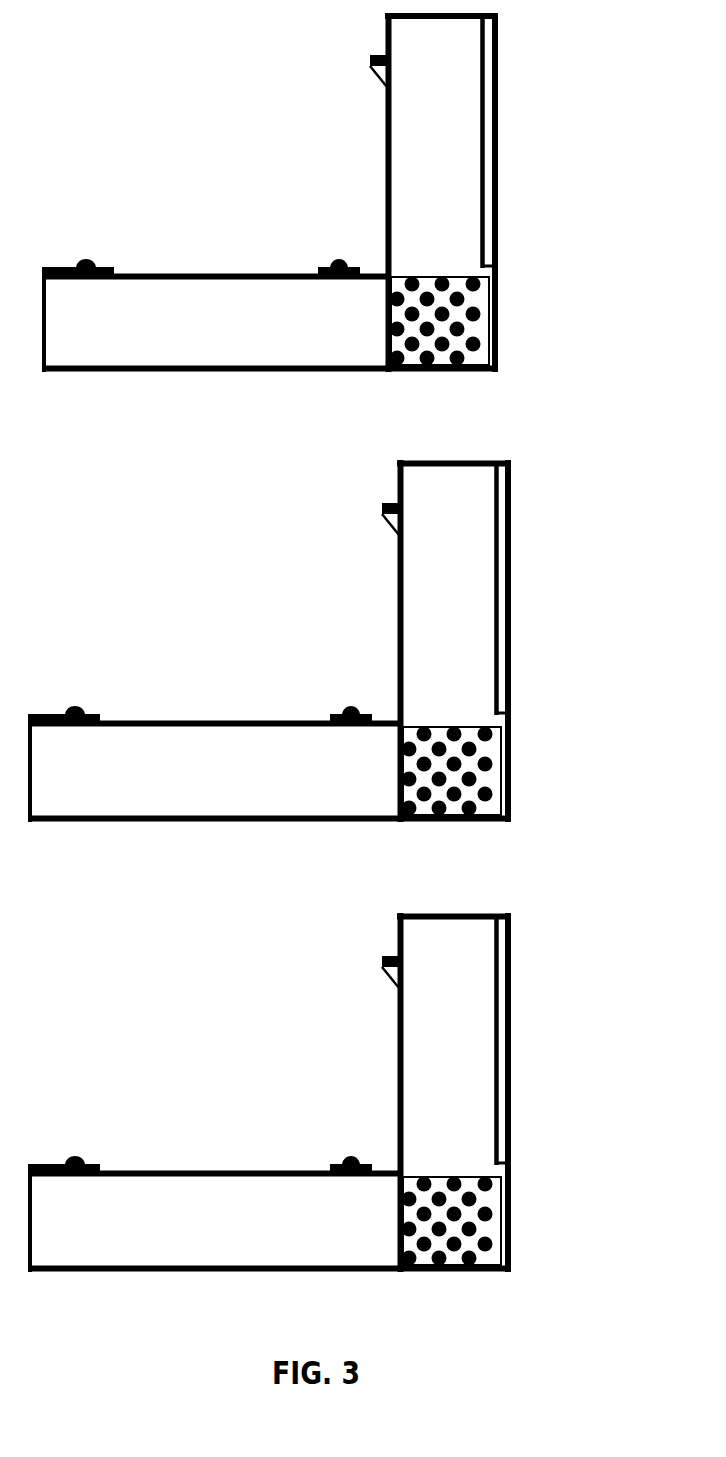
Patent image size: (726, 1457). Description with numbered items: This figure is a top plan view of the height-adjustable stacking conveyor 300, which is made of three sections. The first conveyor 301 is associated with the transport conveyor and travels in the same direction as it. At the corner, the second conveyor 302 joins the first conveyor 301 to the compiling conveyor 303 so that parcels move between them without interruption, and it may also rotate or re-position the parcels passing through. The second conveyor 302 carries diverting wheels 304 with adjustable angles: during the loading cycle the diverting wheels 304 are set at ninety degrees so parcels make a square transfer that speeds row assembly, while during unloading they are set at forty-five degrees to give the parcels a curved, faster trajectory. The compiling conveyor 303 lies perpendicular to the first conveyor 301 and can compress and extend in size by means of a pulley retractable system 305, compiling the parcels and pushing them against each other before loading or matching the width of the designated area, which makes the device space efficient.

The stacking conveyor 300 is at (203, 395).
The first conveyor 301 is at (385, 148).
The second conveyor 302 is at (492, 318).
The compiling conveyor 303 is at (262, 275).
The diverting wheels 304 is at (495, 358).
The pulley retractable system 305 is at (56, 268).